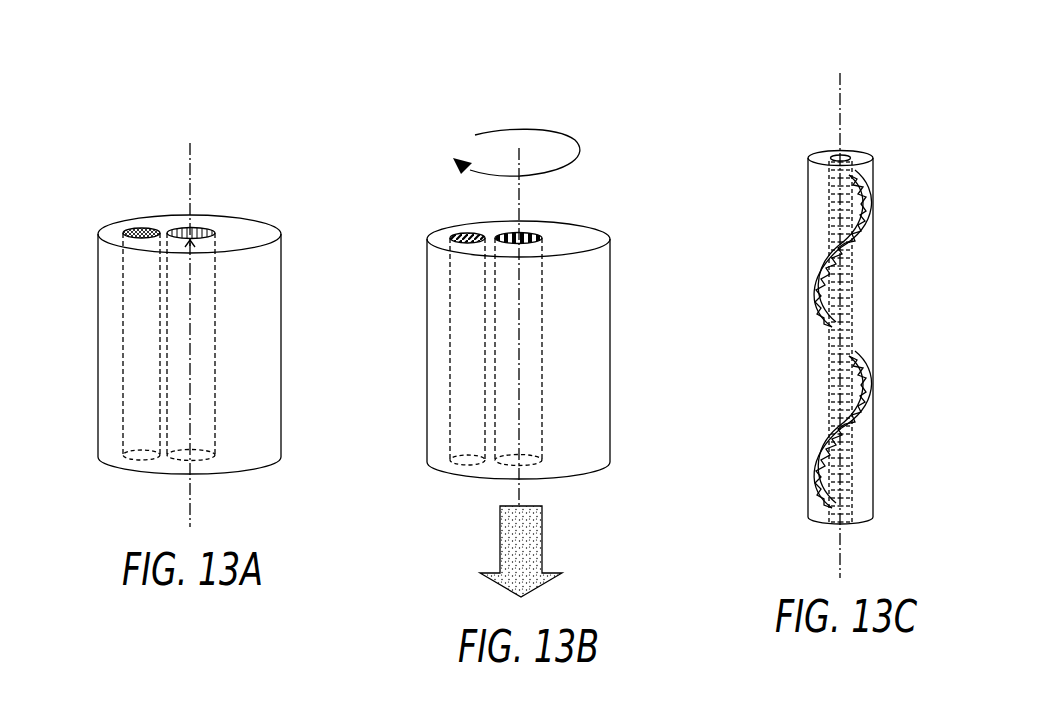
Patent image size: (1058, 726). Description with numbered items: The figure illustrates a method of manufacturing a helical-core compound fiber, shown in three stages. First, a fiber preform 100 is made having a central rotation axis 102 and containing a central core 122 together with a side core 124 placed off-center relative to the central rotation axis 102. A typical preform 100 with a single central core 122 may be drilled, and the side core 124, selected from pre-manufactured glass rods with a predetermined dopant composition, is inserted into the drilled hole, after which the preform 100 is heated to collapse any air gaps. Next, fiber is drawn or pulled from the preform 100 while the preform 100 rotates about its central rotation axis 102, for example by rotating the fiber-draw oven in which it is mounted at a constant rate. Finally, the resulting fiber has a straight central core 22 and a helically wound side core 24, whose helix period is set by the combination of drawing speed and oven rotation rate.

In FIG. 13A, the fiber preform 100 is at (280, 183).
In FIG. 13B, the fiber preform 100 is at (622, 193).
In FIG. 13A, the central rotation axis 102 is at (187, 182).
In FIG. 13B, the central rotation axis 102 is at (517, 207).
In FIG. 13C, the central rotation axis 102 is at (842, 115).
In FIG. 13A, the central core 122 is at (202, 330).
In FIG. 13B, the central core 122 is at (530, 313).
In FIG. 13A, the side core 124 is at (137, 288).
In FIG. 13B, the side core 124 is at (463, 288).
In FIG. 13C, the central core 22 is at (837, 187).
In FIG. 13C, the helically-wound side core 24 is at (868, 207).